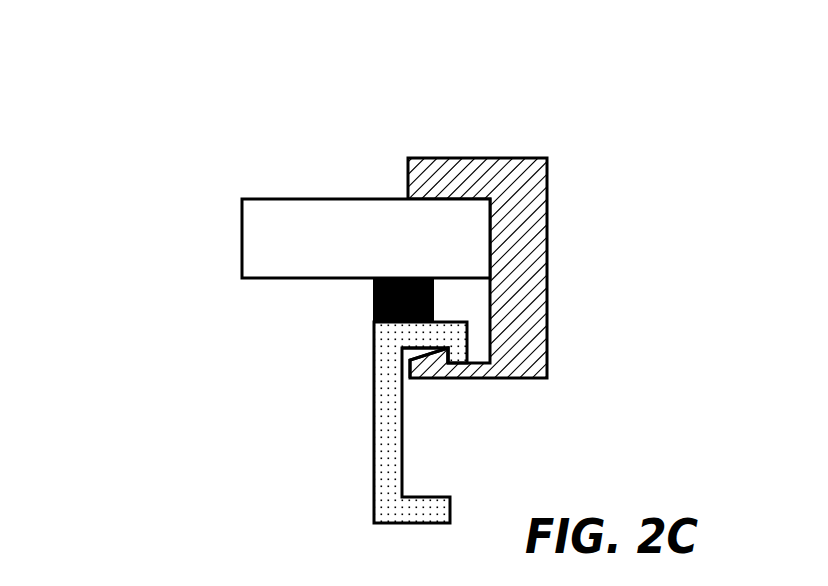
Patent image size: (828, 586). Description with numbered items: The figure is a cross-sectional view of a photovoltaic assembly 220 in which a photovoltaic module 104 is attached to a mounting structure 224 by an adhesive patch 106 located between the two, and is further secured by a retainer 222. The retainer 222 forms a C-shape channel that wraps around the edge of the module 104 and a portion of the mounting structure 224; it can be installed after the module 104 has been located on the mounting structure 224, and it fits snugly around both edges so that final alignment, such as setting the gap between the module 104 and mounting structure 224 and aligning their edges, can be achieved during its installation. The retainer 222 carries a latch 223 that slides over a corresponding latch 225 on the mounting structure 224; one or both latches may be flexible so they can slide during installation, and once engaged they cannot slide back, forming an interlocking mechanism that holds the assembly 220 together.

The photovoltaic assembly 220 is at (264, 124).
The retainer 222 is at (510, 158).
The photovoltaic module 104 is at (242, 241).
The adhesive patch 106 is at (374, 300).
The mounting structure 224 is at (374, 455).
The latch of mounting structure 225 is at (455, 348).
The latch of retainer 223 is at (433, 361).